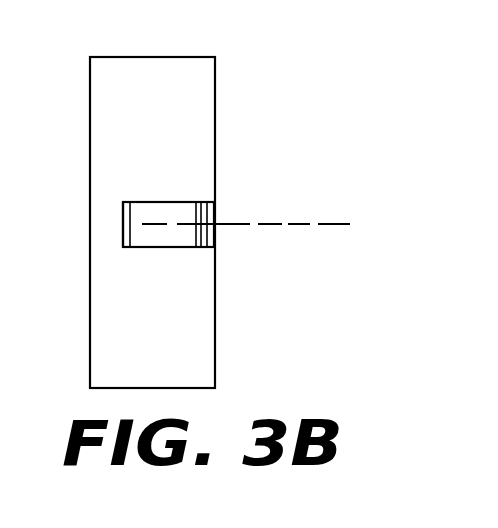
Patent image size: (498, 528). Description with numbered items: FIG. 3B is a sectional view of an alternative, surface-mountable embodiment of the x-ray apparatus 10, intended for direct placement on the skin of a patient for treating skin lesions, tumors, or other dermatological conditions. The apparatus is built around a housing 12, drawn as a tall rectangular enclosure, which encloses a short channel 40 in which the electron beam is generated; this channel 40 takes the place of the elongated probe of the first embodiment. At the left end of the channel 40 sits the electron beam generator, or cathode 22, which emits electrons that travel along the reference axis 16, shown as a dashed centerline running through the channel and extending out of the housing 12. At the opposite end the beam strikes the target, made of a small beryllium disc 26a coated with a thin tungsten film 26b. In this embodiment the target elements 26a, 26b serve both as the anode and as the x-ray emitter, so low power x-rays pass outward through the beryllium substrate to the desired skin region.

The x-ray apparatus 10 is at (342, 117).
The housing 12 is at (160, 57).
The reference axis 16 is at (310, 224).
The electron beam generator (cathode) 22 is at (123, 200).
The beryllium disc 26a is at (210, 213).
The tungsten film 26b is at (197, 200).
The channel 40 is at (210, 252).